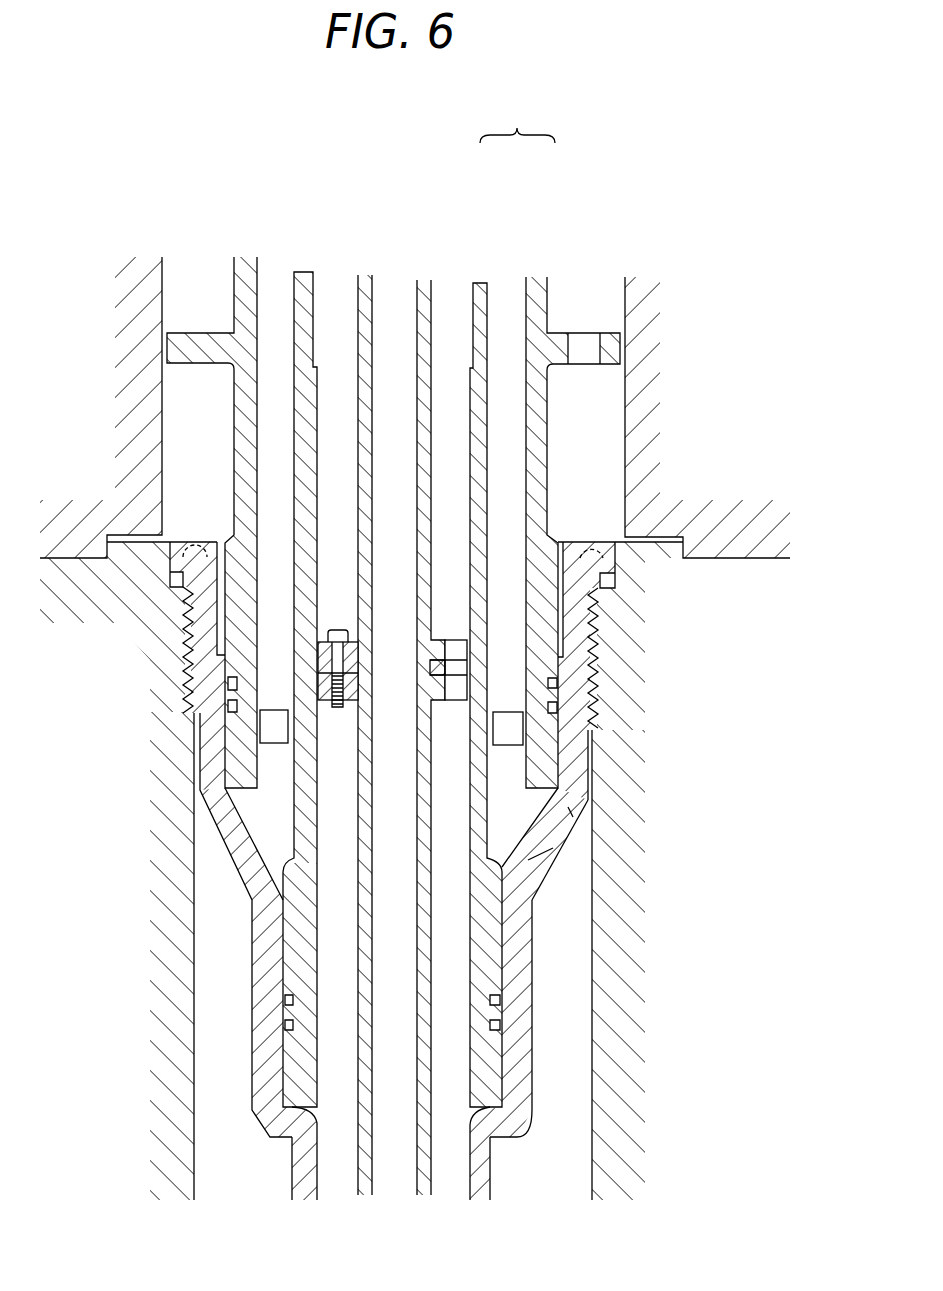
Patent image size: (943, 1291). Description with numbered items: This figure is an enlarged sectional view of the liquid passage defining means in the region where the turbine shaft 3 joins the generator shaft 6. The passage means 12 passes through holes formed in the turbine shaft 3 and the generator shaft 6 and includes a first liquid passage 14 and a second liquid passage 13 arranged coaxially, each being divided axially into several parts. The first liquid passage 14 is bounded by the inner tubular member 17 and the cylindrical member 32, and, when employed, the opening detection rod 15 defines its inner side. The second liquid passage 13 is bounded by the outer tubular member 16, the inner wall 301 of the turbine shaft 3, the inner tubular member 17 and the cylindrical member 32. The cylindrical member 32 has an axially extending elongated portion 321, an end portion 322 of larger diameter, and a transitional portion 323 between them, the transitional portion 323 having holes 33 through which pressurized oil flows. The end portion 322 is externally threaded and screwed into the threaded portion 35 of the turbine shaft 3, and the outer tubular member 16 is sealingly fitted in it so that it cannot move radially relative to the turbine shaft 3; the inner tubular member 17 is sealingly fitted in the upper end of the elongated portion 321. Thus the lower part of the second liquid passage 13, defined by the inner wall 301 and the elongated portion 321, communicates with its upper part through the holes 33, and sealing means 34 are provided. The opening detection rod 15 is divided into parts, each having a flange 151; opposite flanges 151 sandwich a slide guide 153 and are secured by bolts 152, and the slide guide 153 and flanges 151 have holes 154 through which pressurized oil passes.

The turbine shaft 3 is at (400, 871).
The generator shaft 6 is at (661, 441).
The passage means 12 is at (502, 370).
The second liquid passage 13 is at (513, 305).
The first liquid passage 14 is at (456, 312).
The opening detection rod 15 is at (423, 280).
The outer tubular member 16 is at (540, 290).
The inner tubular member 17 is at (483, 300).
The cylindrical member 32 is at (440, 871).
The holes 33 is at (550, 848).
The sealing means 34 is at (500, 1002).
The threaded portion 35 is at (597, 657).
The flange 151 is at (333, 630).
The bolts 152 is at (340, 625).
The slide guide 153 is at (333, 708).
The holes 154 is at (453, 648).
The inner wall 301 is at (592, 1113).
The elongated portion 321 is at (490, 1168).
The end portion 322 is at (649, 871).
The transitional portion 323 is at (590, 828).